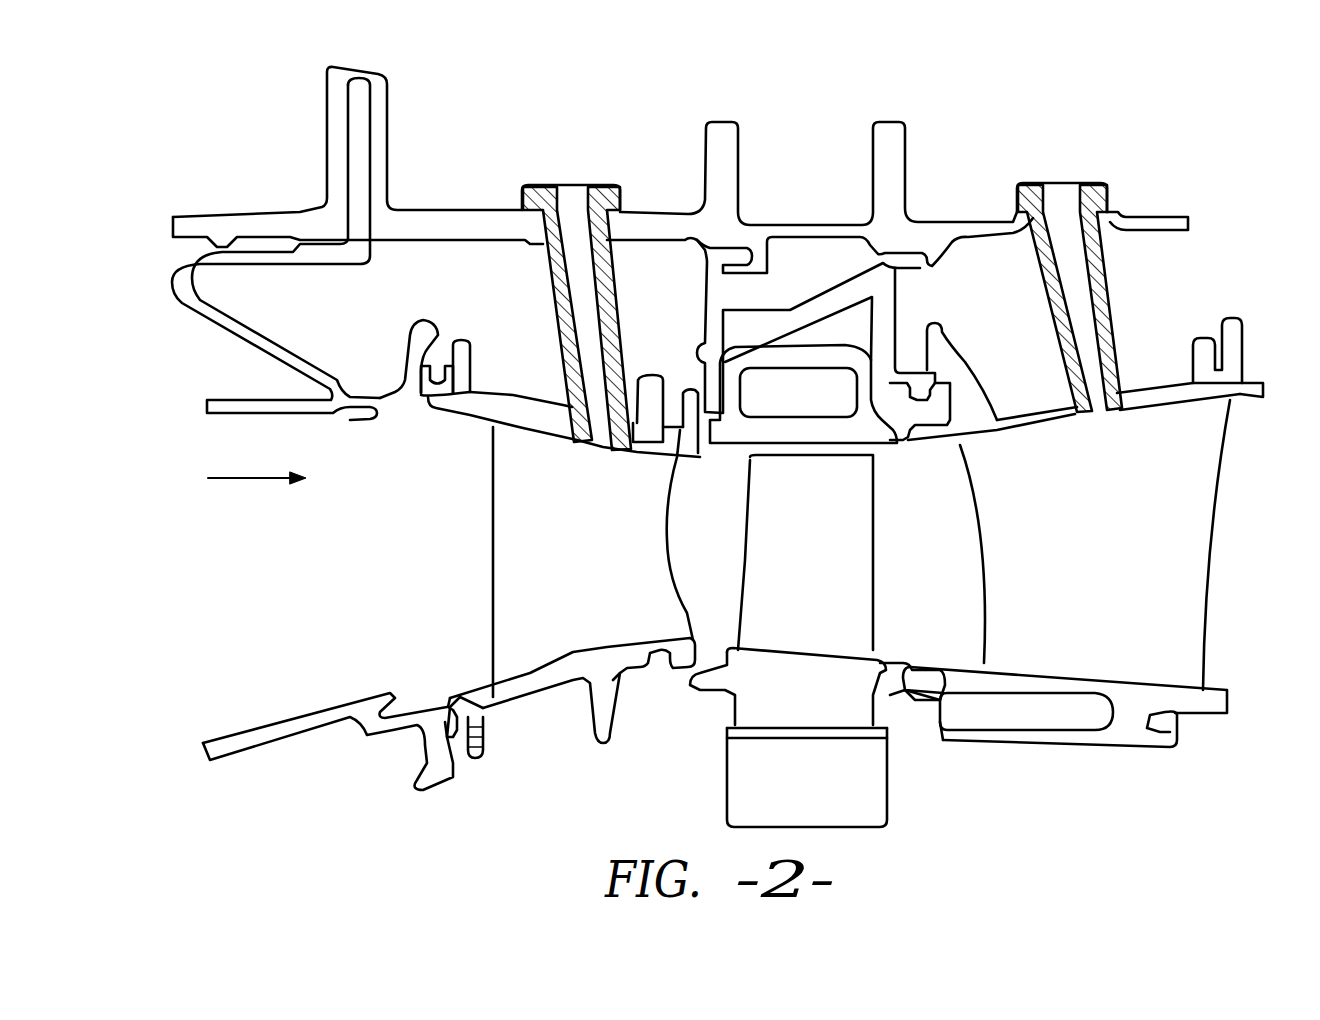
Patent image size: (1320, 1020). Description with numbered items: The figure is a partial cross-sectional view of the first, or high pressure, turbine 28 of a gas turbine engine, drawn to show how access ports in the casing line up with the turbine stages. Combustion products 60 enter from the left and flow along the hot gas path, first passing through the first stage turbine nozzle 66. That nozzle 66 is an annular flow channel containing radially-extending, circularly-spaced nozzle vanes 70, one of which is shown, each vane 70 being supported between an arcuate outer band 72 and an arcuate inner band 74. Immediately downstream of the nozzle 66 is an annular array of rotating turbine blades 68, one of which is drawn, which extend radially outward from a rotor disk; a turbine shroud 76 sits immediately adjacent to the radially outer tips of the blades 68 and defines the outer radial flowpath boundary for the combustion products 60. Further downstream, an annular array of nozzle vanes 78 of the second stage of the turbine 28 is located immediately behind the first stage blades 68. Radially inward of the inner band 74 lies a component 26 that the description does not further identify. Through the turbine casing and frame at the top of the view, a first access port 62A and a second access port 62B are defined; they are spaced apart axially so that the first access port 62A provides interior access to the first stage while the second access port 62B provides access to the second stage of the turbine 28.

The inner casing 26 is at (285, 723).
The first turbine 28 is at (680, 243).
The combustion products 60 is at (240, 483).
The first access port 62A is at (566, 166).
The second access port 62B is at (1054, 166).
The first stage turbine nozzle 66 is at (540, 540).
The turbine blades 68 is at (824, 563).
The nozzle vanes 70 is at (603, 556).
The outer bands 72 is at (513, 397).
The inner bands 74 is at (512, 692).
The turbine shroud 76 is at (833, 357).
The second stage nozzle vanes 78 is at (1117, 561).